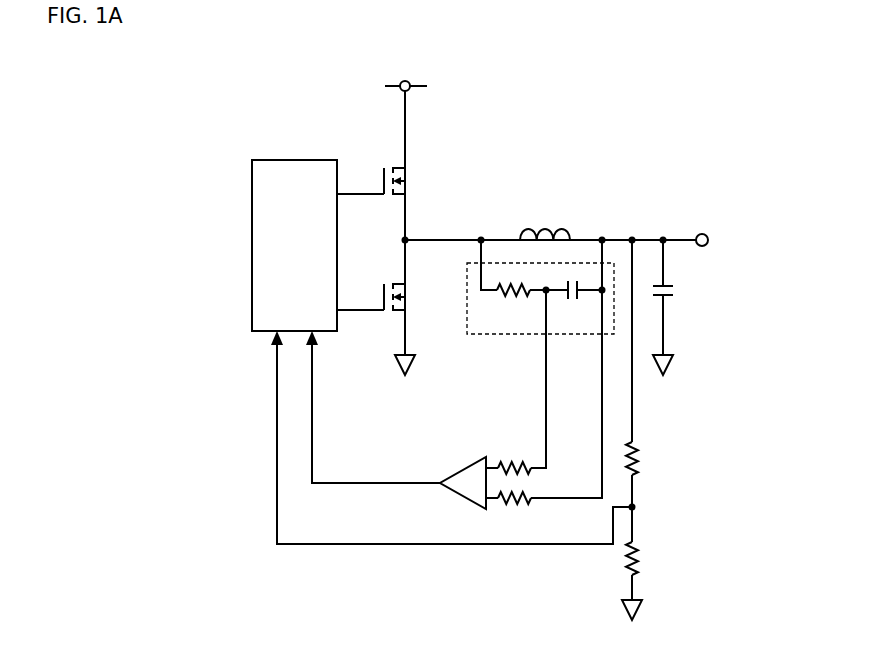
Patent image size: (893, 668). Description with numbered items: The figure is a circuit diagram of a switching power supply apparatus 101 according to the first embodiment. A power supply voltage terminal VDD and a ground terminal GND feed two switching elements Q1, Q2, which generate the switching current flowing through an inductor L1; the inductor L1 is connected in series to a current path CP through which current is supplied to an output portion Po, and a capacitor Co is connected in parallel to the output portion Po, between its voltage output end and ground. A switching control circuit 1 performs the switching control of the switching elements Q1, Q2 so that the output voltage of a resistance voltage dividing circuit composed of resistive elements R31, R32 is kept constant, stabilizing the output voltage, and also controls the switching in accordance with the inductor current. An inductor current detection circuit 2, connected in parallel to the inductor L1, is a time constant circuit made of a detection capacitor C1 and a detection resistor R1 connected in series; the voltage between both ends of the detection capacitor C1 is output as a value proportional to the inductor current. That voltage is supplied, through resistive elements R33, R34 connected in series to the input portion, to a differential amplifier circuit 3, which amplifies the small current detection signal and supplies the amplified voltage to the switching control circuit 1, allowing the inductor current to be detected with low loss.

The switching power supply apparatus 101 is at (655, 58).
The switching control circuit 1 is at (295, 160).
The inductor current detection circuit 2 is at (489, 339).
The differential amplifier circuit 3 is at (465, 461).
The switching element Q1 is at (390, 181).
The switching element Q2 is at (391, 297).
The inductor L1 is at (545, 220).
The detection resistor R1 is at (524, 286).
The detection capacitor C1 is at (580, 286).
The capacitor Co is at (682, 307).
The resistive element R31 is at (658, 391).
The resistive element R32 is at (480, 475).
The resistive element R33 is at (516, 382).
The resistive element R34 is at (544, 413).
The current path CP is at (455, 240).
The output portion Po is at (721, 240).
The power supply voltage terminal VDD is at (402, 72).
The ground terminal GND is at (404, 382).